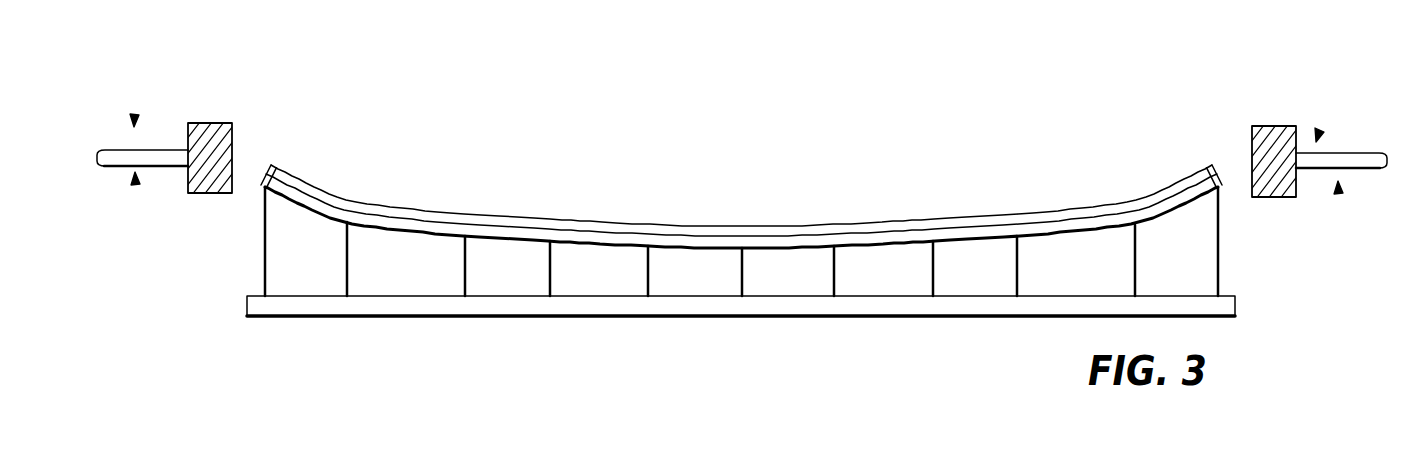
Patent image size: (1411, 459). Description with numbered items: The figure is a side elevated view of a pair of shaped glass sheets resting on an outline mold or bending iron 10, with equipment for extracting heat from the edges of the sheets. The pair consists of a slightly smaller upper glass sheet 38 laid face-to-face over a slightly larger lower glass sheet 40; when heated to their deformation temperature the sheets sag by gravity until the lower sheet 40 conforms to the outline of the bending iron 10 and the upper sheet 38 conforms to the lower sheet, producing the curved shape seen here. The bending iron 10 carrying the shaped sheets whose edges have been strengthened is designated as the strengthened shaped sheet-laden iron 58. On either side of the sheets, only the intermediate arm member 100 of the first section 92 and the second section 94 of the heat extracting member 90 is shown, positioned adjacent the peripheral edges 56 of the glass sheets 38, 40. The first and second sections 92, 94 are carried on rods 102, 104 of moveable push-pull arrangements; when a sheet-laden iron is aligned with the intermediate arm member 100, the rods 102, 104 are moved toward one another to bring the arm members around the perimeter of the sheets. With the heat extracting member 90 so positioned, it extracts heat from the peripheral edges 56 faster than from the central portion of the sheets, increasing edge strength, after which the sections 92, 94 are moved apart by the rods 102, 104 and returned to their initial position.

The bending iron 10 is at (450, 335).
The upper glass sheet 38 is at (592, 220).
The lower glass sheet 40 is at (528, 237).
The peripheral edges 56 is at (263, 170).
The strengthened shaped sheet-laden iron 58 is at (791, 184).
The heat extracting member 90 is at (135, 182).
The first section 92 is at (1319, 133).
The second section 94 is at (135, 118).
The intermediate arm member 100 is at (207, 123).
The rod 102 is at (1337, 151).
The rod 104 is at (158, 150).